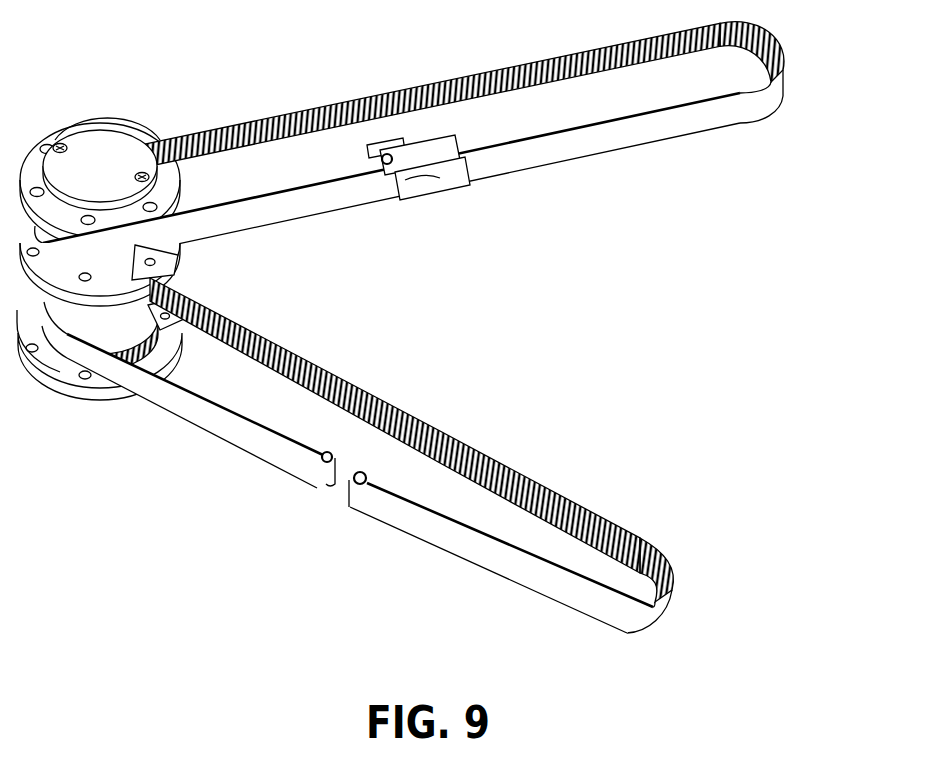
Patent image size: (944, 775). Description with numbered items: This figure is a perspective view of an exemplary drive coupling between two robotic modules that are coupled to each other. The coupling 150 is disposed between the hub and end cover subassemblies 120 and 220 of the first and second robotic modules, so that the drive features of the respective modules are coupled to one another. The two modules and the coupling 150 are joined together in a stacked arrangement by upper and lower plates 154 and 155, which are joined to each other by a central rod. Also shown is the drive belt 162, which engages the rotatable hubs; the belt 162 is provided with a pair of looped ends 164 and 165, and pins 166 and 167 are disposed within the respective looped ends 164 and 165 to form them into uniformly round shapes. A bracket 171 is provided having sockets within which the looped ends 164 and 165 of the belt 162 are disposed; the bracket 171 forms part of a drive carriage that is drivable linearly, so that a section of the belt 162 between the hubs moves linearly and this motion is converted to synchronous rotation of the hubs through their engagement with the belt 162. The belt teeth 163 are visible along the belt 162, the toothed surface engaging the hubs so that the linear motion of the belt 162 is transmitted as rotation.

The hub and end cover subassembly 120 is at (85, 100).
The coupling 150 is at (64, 302).
The upper plate 154 is at (123, 148).
The lower plate 155 is at (110, 384).
The drive belt 162 is at (245, 165).
The belt teeth 163 is at (462, 108).
The looped end 164 is at (380, 162).
The looped end 165 is at (368, 486).
The pin 166 is at (328, 462).
The pin 167 is at (360, 471).
The bracket 171 is at (452, 148).
The hub and end cover subassembly 220 is at (83, 420).